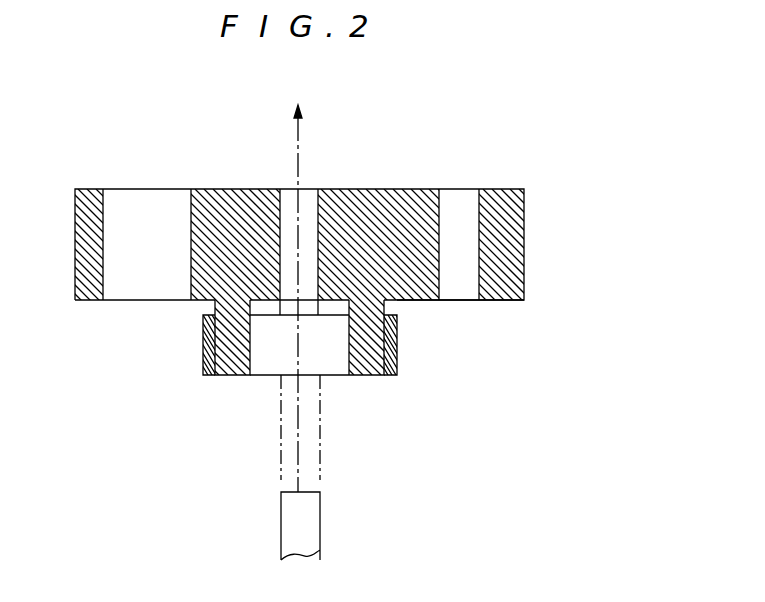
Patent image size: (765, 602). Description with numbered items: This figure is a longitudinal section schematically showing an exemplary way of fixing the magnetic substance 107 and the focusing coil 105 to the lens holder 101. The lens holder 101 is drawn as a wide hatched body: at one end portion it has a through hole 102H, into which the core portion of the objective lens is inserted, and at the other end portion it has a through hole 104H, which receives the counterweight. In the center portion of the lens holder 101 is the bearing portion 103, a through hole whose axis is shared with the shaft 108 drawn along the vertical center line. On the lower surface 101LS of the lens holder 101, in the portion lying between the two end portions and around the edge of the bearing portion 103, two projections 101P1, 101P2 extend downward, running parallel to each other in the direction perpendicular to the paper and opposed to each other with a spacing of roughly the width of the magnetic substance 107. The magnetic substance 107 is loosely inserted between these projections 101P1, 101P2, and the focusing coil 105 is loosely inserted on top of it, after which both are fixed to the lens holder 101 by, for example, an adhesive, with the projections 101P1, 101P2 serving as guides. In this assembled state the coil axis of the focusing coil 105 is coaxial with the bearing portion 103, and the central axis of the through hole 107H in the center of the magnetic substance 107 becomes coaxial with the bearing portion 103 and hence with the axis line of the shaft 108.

The lens holder 101 is at (524, 243).
The lower surface of the lens holder 101LS is at (503, 300).
The projection 101P1 is at (223, 376).
The projection 101P2 is at (372, 376).
The through hole 102H is at (190, 218).
The bearing portion 103 is at (282, 223).
The through hole 104H is at (476, 220).
The focusing coil 105 is at (397, 352).
The magnetic substance 107 is at (258, 310).
The through hole 107H is at (309, 302).
The shaft 108 is at (320, 523).